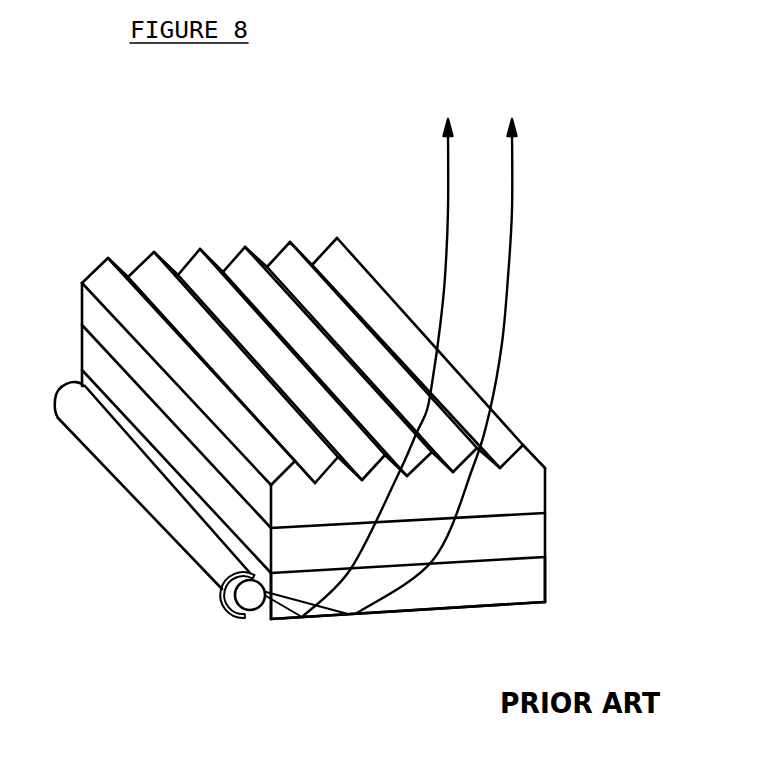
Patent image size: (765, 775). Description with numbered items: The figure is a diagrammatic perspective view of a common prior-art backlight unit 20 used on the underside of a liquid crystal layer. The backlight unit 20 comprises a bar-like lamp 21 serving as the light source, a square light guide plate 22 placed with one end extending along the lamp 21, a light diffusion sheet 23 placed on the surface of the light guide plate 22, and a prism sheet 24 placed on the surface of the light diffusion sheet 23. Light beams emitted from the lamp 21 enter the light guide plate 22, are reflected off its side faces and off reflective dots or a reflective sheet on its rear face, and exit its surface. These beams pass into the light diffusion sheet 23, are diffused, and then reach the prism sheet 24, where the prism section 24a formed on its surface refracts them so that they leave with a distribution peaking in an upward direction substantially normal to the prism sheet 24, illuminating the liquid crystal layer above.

The backlight unit 20 is at (356, 383).
The lamp 21 is at (222, 578).
The light guide plate 22 is at (537, 585).
The light diffusion sheet 23 is at (537, 542).
The prism sheet 24 is at (356, 364).
The prism section 24a is at (340, 263).